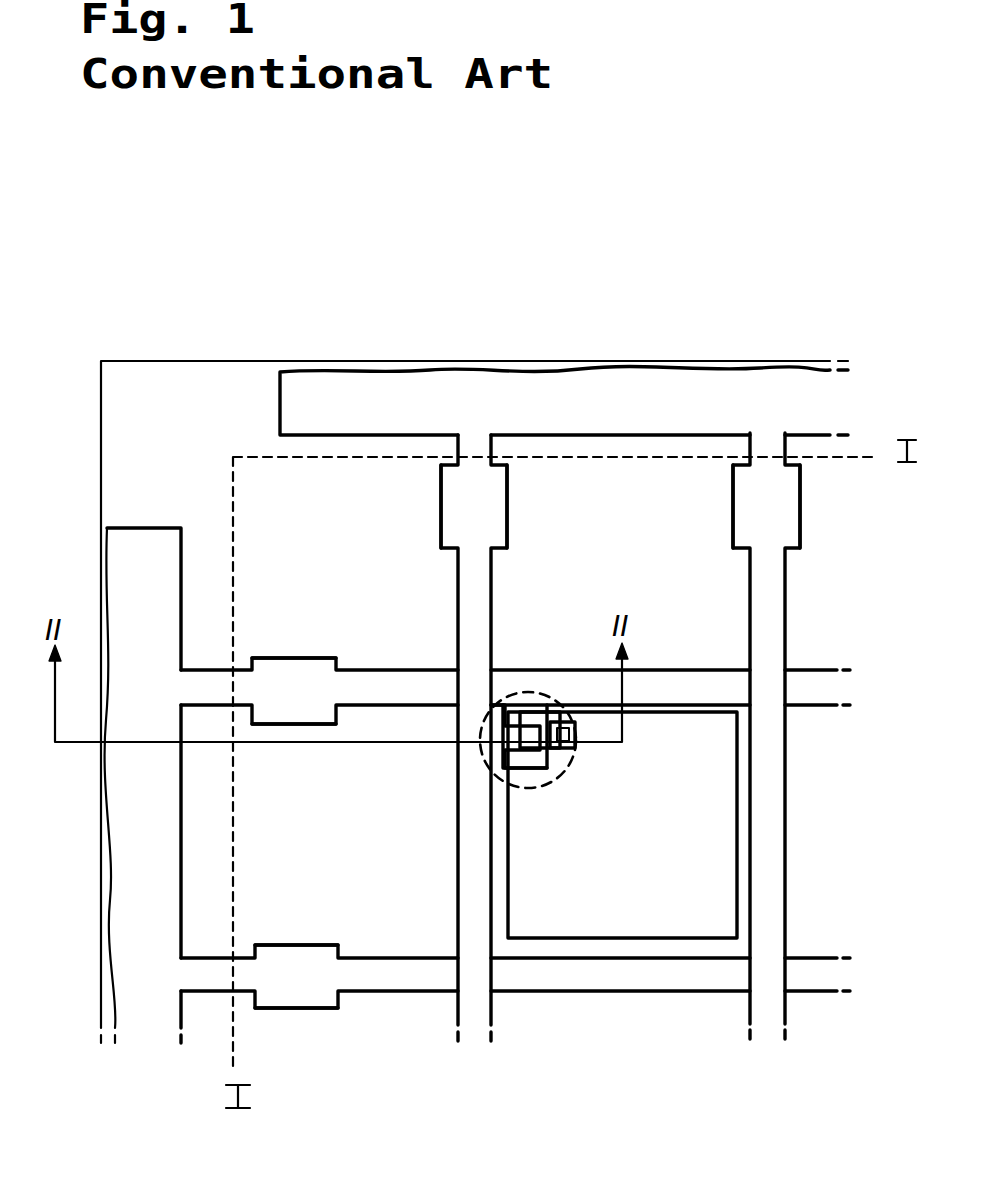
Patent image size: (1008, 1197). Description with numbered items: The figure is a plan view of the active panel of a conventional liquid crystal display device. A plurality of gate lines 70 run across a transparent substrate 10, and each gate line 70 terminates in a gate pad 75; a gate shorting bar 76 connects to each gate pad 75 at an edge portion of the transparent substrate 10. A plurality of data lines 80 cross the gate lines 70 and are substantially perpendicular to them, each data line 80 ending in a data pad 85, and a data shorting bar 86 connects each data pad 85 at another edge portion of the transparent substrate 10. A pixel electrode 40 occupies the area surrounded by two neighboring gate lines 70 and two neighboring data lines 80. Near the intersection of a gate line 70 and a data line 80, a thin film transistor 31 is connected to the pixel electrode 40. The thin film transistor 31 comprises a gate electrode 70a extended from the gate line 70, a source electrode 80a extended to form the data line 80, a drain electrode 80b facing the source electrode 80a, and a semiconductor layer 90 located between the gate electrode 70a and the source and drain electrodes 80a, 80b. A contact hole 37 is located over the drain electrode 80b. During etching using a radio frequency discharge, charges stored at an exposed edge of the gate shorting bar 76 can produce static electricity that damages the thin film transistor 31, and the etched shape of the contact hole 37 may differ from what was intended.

The transparent substrate 10 is at (182, 388).
The data shorting bar 86 is at (606, 400).
The data pad 85 is at (494, 505).
The gate pad 75 is at (292, 670).
The semiconductor layer 90 is at (523, 710).
The contact hole 37 is at (565, 727).
The gate line 70 is at (808, 675).
The data line 80 is at (468, 1008).
The source electrode 80a is at (487, 745).
The drain electrode 80b is at (575, 750).
The gate electrode 70a is at (522, 770).
The thin film transistor 31 is at (572, 770).
The gate shorting bar 76 is at (142, 848).
The pixel electrode 40 is at (725, 870).